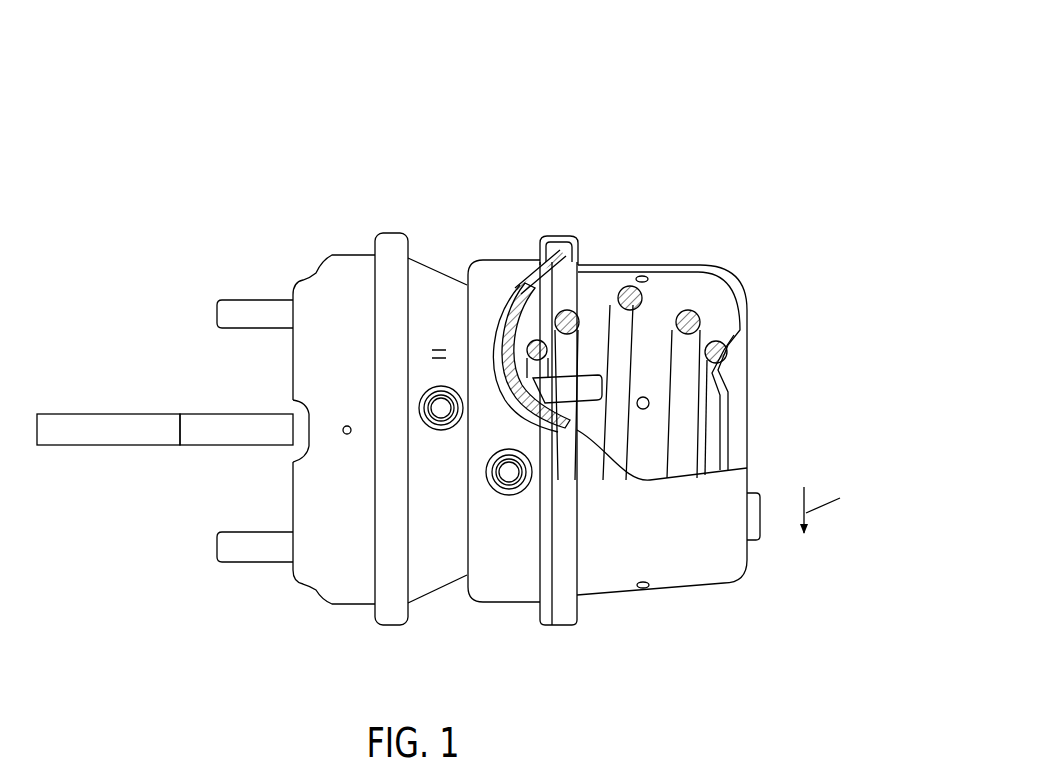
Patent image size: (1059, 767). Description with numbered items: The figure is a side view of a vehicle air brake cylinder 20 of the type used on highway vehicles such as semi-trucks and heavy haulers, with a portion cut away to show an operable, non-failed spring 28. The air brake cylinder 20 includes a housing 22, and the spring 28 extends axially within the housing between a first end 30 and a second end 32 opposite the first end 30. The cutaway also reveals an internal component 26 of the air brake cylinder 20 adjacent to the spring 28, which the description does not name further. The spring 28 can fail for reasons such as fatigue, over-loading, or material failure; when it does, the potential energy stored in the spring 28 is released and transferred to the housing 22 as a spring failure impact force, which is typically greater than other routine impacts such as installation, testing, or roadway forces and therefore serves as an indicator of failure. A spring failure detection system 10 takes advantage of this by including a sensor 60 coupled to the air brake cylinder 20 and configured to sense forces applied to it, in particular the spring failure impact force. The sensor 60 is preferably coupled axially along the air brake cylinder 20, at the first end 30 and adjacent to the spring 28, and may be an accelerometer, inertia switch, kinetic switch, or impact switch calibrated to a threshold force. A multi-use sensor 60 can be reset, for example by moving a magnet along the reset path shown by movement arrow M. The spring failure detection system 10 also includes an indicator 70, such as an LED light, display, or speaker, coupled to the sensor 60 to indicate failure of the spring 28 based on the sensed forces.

The spring failure detection system 10 is at (650, 76).
The air brake cylinder 20 is at (356, 150).
The housing 22 is at (484, 275).
The diaphragm 26 is at (595, 280).
The spring 28 is at (632, 290).
The first end 30 is at (781, 315).
The second end 32 is at (489, 616).
The sensor 60 is at (781, 550).
The indicator 70 is at (752, 495).